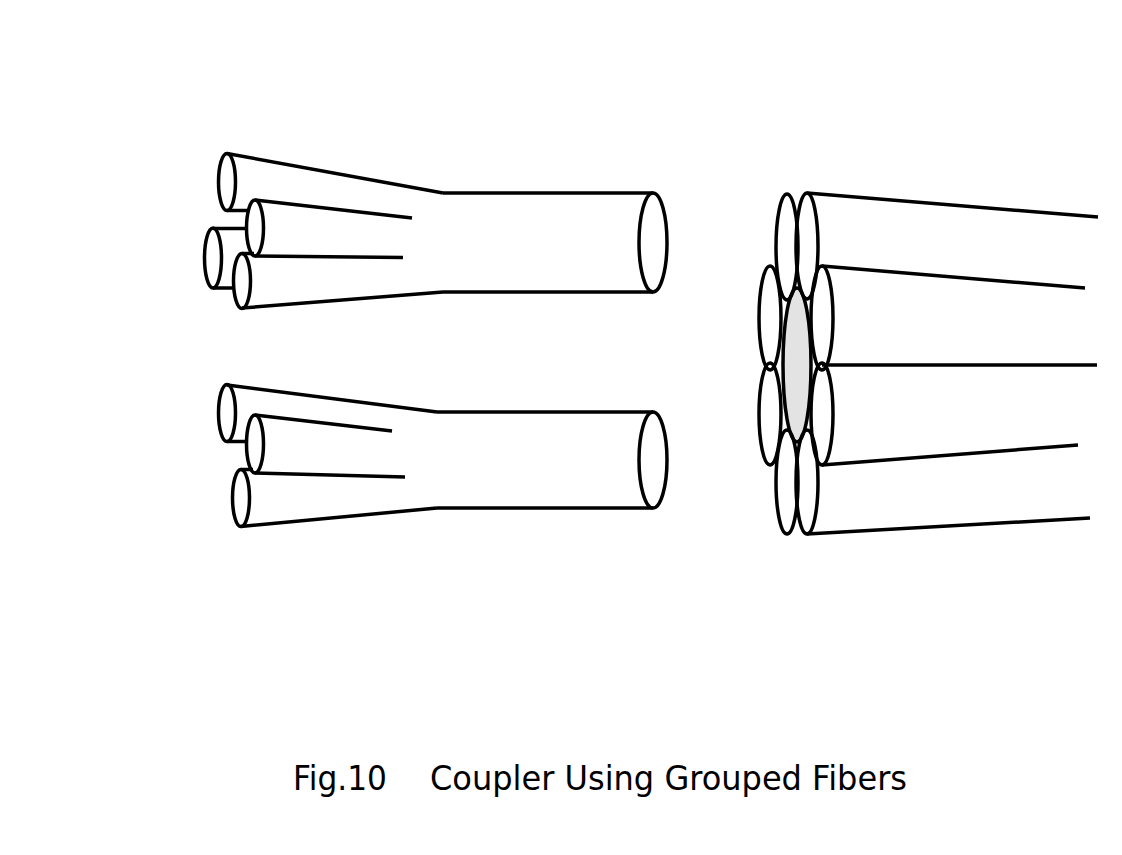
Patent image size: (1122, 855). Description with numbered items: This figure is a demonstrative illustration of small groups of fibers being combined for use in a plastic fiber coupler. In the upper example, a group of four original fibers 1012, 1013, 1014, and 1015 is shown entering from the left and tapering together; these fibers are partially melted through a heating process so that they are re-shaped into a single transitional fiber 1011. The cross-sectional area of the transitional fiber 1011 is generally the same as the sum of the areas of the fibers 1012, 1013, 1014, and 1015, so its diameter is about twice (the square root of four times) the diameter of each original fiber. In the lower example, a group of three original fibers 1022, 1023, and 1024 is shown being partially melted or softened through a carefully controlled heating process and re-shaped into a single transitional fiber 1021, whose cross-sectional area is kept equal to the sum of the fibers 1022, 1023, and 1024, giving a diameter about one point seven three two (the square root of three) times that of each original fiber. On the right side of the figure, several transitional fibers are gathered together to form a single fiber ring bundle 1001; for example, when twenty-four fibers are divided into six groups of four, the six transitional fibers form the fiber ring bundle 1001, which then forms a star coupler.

The fiber ring bundle 1001 is at (882, 197).
The transitional fiber 1011 is at (597, 190).
The fiber 1012 is at (277, 215).
The fiber 1013 is at (202, 268).
The fiber 1014 is at (235, 302).
The fiber 1015 is at (250, 188).
The transitional fiber 1021 is at (583, 510).
The fiber 1022 is at (288, 448).
The fiber 1023 is at (227, 408).
The fiber 1024 is at (234, 522).